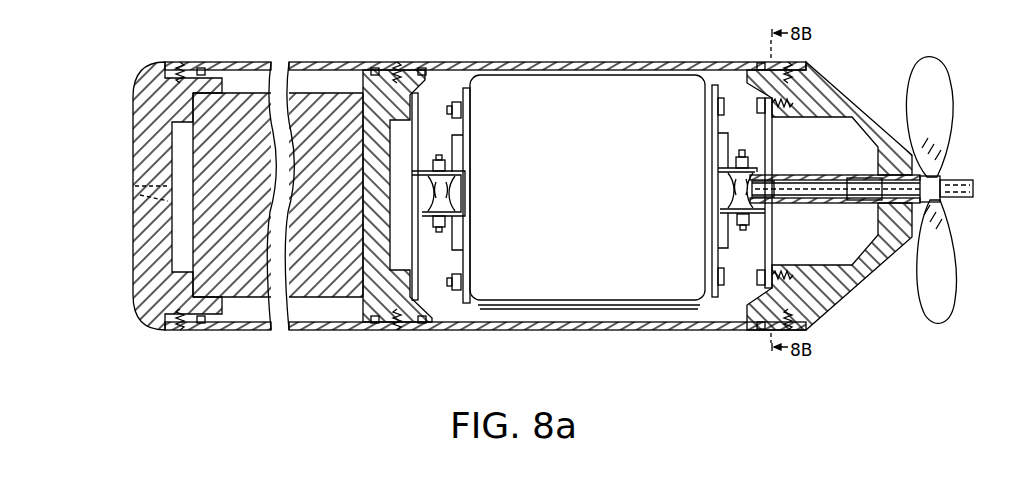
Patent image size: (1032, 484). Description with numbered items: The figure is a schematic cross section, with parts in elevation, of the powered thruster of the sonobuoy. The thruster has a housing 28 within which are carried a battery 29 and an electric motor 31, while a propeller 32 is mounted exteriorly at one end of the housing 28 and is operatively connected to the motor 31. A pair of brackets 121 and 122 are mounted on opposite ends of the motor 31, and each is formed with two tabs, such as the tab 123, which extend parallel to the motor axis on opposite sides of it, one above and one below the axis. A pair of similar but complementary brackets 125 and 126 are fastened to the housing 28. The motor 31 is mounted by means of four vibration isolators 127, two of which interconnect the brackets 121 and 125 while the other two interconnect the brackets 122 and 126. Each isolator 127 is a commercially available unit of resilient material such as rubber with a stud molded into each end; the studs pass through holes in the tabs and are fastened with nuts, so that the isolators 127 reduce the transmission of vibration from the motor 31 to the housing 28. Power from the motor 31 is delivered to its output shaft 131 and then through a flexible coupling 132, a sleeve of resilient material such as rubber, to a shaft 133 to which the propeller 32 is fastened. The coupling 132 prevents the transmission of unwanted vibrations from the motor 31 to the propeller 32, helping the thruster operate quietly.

The housing 28 is at (578, 60).
The battery 29 is at (250, 203).
The electric motor 31 is at (592, 178).
The propeller 32 is at (950, 70).
The bracket 121 is at (712, 120).
The bracket 122 is at (470, 124).
The tab 123 is at (716, 175).
The bracket 125 is at (772, 133).
The bracket 126 is at (432, 196).
The vibration isolator 127 is at (448, 193).
The output shaft 131 is at (783, 203).
The flexible coupling 132 is at (800, 175).
The shaft 133 is at (972, 186).